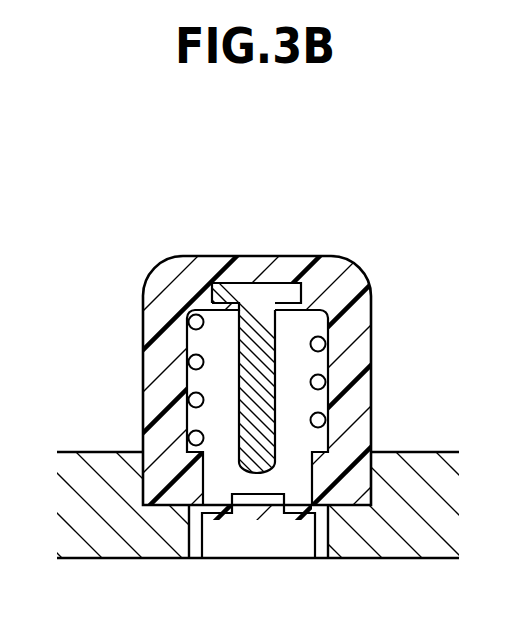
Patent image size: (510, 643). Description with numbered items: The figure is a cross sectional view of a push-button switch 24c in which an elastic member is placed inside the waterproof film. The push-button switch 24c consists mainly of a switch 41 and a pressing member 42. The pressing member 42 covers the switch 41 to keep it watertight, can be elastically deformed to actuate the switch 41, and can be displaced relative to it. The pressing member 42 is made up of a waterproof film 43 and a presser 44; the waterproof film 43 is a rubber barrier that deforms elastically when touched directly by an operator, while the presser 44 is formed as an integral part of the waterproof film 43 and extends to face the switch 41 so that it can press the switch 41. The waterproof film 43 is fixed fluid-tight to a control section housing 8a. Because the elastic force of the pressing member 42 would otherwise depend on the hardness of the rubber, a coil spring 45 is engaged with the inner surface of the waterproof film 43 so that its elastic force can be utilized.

The push-button switch 24c is at (255, 378).
The pressing member 42 is at (255, 378).
The waterproof film 43 is at (180, 278).
The presser 44 is at (150, 200).
The coil spring 45 is at (322, 347).
The switch 41 is at (270, 538).
The control section housing 8a is at (363, 545).